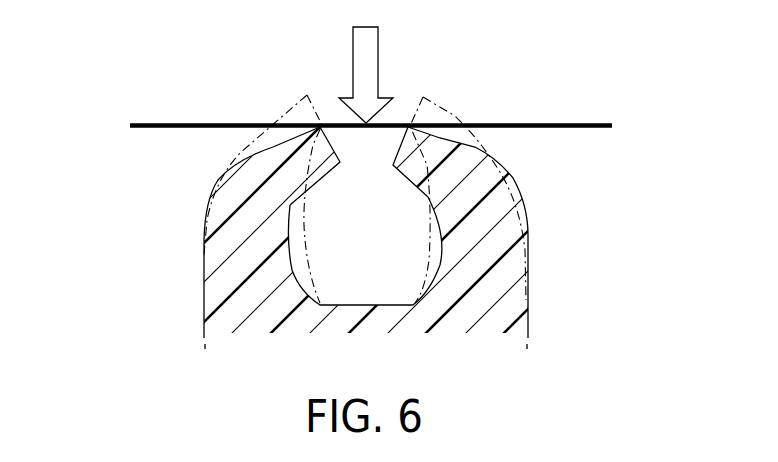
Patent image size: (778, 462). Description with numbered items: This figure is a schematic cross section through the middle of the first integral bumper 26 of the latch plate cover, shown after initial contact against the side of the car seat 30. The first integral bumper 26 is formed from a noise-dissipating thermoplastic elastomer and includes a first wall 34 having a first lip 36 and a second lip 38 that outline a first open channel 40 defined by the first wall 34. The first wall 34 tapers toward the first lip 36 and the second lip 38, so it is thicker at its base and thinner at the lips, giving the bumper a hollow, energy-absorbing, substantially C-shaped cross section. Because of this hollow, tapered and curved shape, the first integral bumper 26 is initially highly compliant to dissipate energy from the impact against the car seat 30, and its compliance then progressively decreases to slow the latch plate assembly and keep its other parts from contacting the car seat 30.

The first integral bumper 26 is at (375, 201).
The car seat 30 is at (163, 126).
The first wall 34 is at (530, 258).
The first lip 36 is at (320, 165).
The second lip 38 is at (400, 165).
The first open channel 40 is at (383, 303).